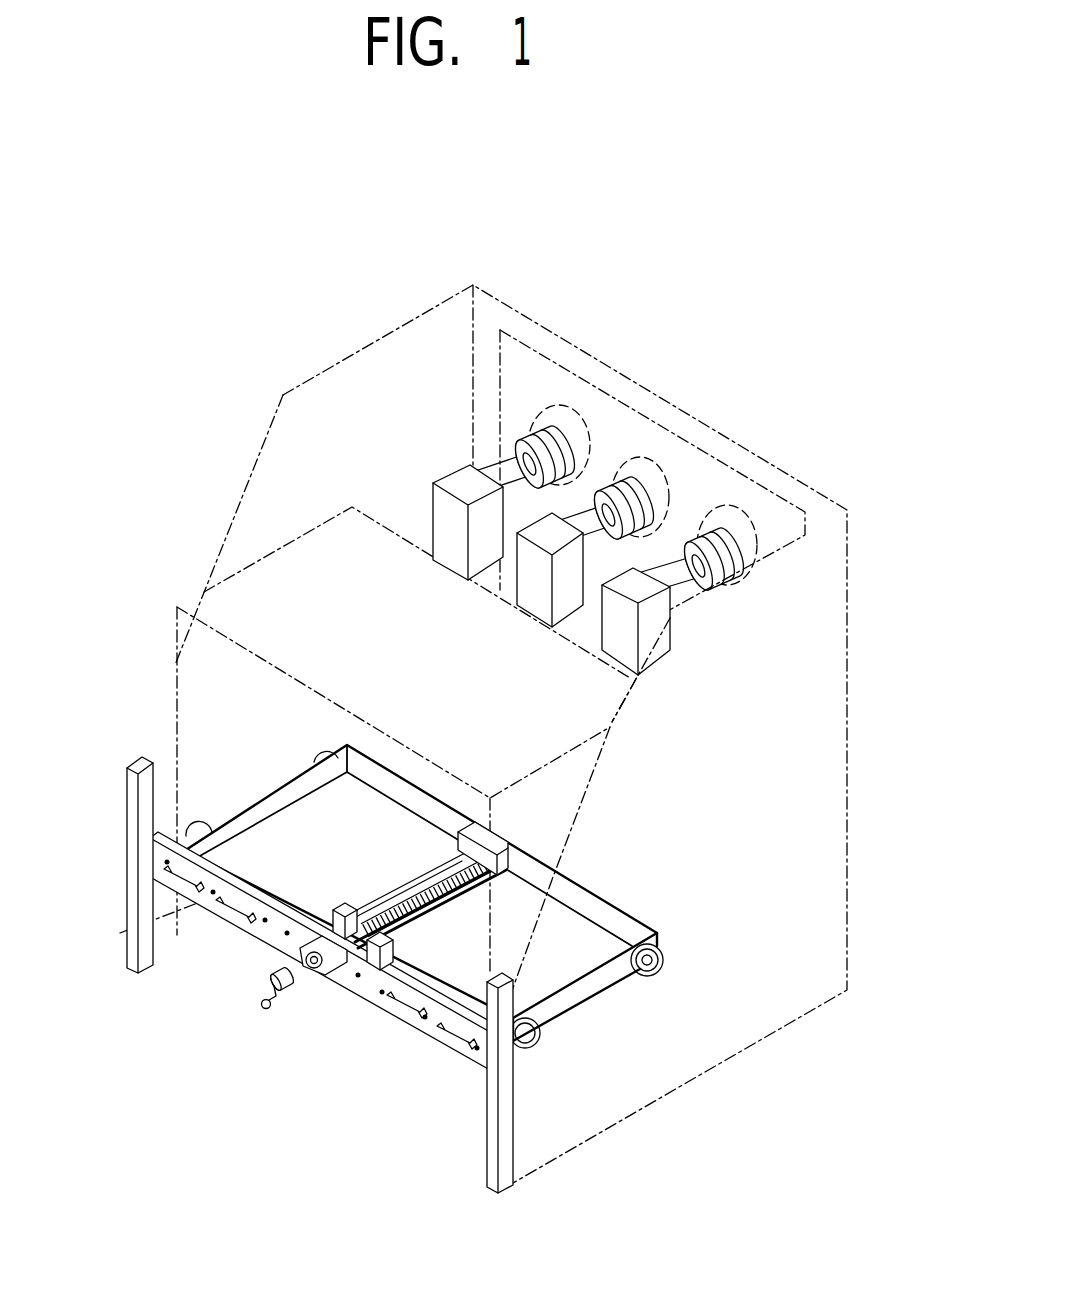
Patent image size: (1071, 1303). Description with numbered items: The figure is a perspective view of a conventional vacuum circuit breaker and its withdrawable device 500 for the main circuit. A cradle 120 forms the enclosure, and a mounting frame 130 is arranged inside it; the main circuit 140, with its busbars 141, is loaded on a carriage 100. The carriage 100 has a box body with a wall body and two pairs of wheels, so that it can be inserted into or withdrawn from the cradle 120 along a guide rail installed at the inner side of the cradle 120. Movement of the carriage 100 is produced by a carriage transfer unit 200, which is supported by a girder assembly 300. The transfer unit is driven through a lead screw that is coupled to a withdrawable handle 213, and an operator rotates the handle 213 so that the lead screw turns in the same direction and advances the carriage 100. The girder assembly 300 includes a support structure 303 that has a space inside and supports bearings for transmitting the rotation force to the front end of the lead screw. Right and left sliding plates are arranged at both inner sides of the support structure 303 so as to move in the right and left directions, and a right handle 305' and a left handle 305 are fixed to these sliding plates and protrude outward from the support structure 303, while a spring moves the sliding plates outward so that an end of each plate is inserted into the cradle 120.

The carriage 100 is at (258, 790).
The cradle 120 is at (835, 766).
The mounting frame 130 is at (643, 432).
The main circuit 140 is at (290, 560).
The busbars 141 is at (508, 462).
The carriage transfer unit 200 is at (257, 1002).
The withdrawable handle 213 is at (267, 981).
The girder assembly 300 is at (475, 1080).
The support structure 303 is at (378, 992).
The left handle 305 is at (100, 870).
The right handle 305' is at (434, 1083).
The withdrawable device 500 is at (337, 1002).